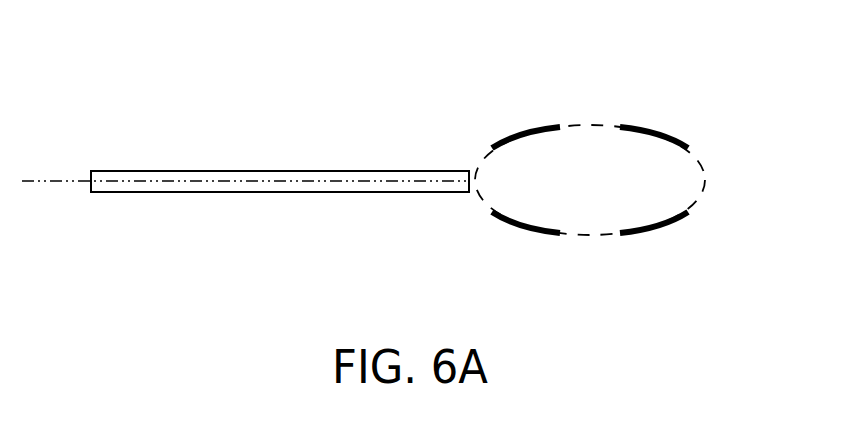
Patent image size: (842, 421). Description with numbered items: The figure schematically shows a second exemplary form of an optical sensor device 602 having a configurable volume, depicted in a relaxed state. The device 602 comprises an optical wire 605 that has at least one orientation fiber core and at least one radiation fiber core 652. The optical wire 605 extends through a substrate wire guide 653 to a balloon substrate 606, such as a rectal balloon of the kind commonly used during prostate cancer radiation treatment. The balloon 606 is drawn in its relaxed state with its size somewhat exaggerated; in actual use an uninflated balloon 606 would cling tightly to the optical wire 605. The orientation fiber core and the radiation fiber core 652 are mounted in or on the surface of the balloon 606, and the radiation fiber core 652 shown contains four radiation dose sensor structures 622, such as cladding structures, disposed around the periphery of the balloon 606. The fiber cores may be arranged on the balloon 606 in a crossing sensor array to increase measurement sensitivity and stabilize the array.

The optical sensor device 602 is at (350, 55).
The optical wire 605 is at (60, 181).
The balloon substrate 606 is at (678, 185).
The radiation dose sensor structures 622 is at (518, 129).
The radiation fiber core 652 is at (190, 181).
The substrate wire guide 653 is at (266, 170).